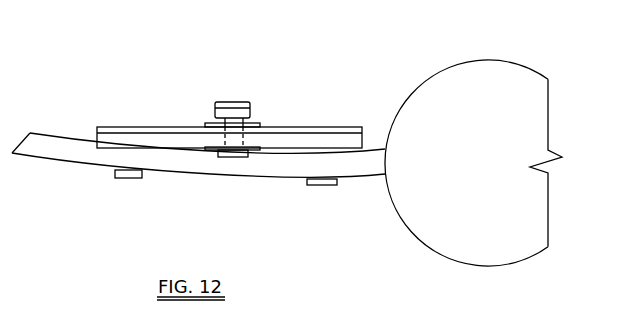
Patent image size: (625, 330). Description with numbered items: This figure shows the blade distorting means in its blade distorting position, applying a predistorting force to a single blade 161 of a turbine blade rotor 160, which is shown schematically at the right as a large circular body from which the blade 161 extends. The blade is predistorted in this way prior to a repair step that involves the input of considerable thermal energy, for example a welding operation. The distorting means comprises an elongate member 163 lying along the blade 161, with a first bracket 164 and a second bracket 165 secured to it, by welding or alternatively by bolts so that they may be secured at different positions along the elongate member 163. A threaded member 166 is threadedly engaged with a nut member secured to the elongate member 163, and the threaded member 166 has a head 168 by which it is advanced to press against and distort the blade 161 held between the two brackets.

The turbine blade rotor 160 is at (487, 97).
The blade 161 is at (266, 170).
The elongate member 163 is at (328, 128).
The first bracket 164 is at (122, 179).
The second bracket 165 is at (334, 187).
The threaded member 166 is at (247, 123).
The head 168 is at (234, 109).